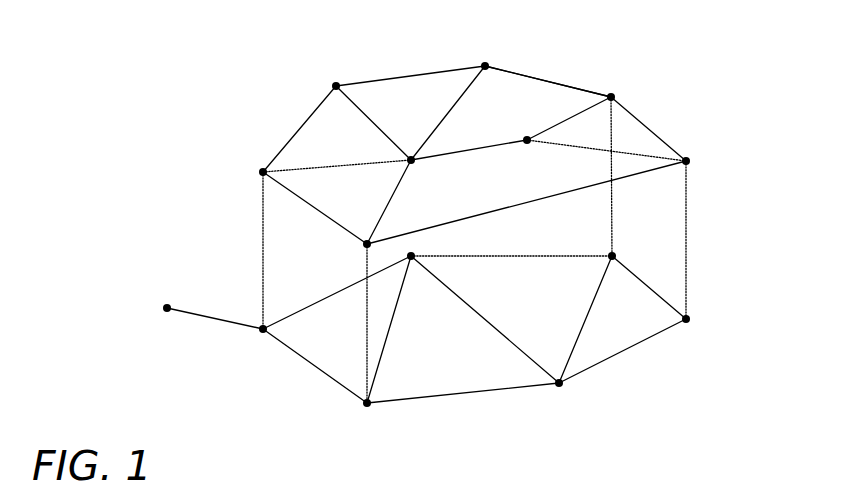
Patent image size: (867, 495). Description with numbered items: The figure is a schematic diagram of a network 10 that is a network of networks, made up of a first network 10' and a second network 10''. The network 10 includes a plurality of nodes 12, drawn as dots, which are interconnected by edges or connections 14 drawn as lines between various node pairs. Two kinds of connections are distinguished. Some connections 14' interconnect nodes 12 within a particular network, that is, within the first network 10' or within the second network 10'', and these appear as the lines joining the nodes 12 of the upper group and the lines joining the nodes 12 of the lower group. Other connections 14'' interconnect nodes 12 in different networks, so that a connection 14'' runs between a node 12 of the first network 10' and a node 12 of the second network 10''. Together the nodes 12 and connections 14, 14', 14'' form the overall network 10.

The network 10 is at (498, 231).
The first network 10' is at (517, 155).
The second network 10'' is at (471, 339).
The node 12 is at (486, 64).
The connection 14 is at (422, 222).
The intra-network connection 14' is at (433, 222).
The inter-network connection 14'' is at (210, 250).